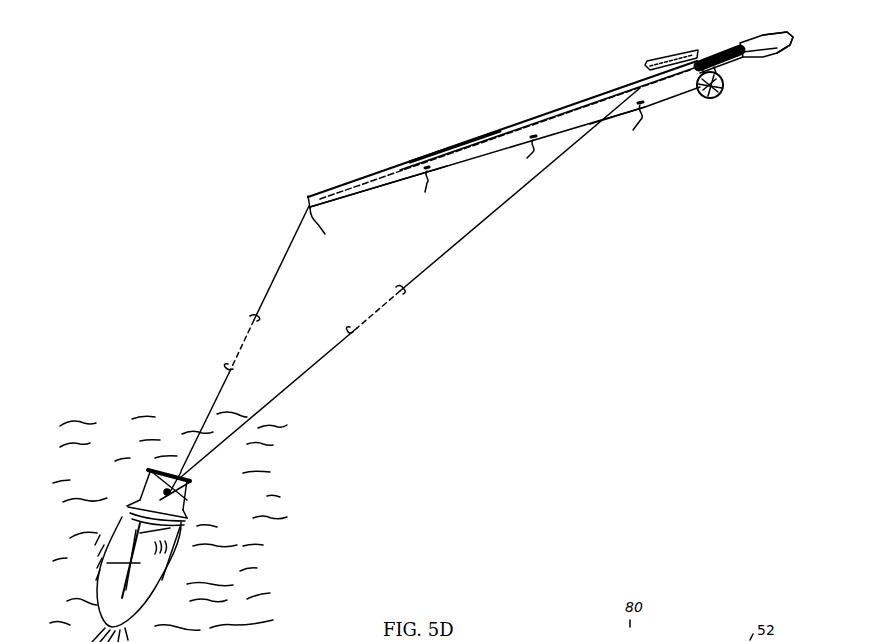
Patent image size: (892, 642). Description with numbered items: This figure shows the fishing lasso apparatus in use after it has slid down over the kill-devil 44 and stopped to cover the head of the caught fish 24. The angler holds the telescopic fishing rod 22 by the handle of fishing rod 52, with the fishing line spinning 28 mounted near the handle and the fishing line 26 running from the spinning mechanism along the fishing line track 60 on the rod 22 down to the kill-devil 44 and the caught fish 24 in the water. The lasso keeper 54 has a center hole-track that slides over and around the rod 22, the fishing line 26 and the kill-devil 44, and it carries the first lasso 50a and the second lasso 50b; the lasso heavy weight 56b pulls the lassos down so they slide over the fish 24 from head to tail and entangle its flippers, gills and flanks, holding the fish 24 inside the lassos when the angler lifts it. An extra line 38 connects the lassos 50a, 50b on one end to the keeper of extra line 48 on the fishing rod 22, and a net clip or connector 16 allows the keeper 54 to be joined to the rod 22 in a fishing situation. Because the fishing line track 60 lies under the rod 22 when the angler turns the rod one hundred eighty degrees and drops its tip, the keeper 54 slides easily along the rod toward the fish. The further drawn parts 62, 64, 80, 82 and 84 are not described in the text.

The net clip or connector 16 is at (777, 60).
The telescopic fishing rod 22 is at (571, 103).
The caught fish 24 is at (159, 577).
The fishing line 26 is at (605, 122).
The fishing line spinning 28 is at (713, 98).
The extra line 38 is at (483, 218).
The kill-devil 44 is at (187, 471).
The keeper of extra line 48 is at (668, 58).
The first lasso 50a is at (147, 490).
The second lasso 50b is at (188, 493).
The handle of fishing rod 52 is at (729, 47).
The lasso keeper 54 is at (152, 472).
The lasso heavy weight 56b is at (182, 506).
The fishing line track 60 is at (476, 177).
The rod blank 62 is at (367, 190).
The reel seat 64 is at (730, 66).
The light strip 80 is at (507, 116).
The light strip segment 82 is at (459, 148).
The reel handle 84 is at (718, 93).